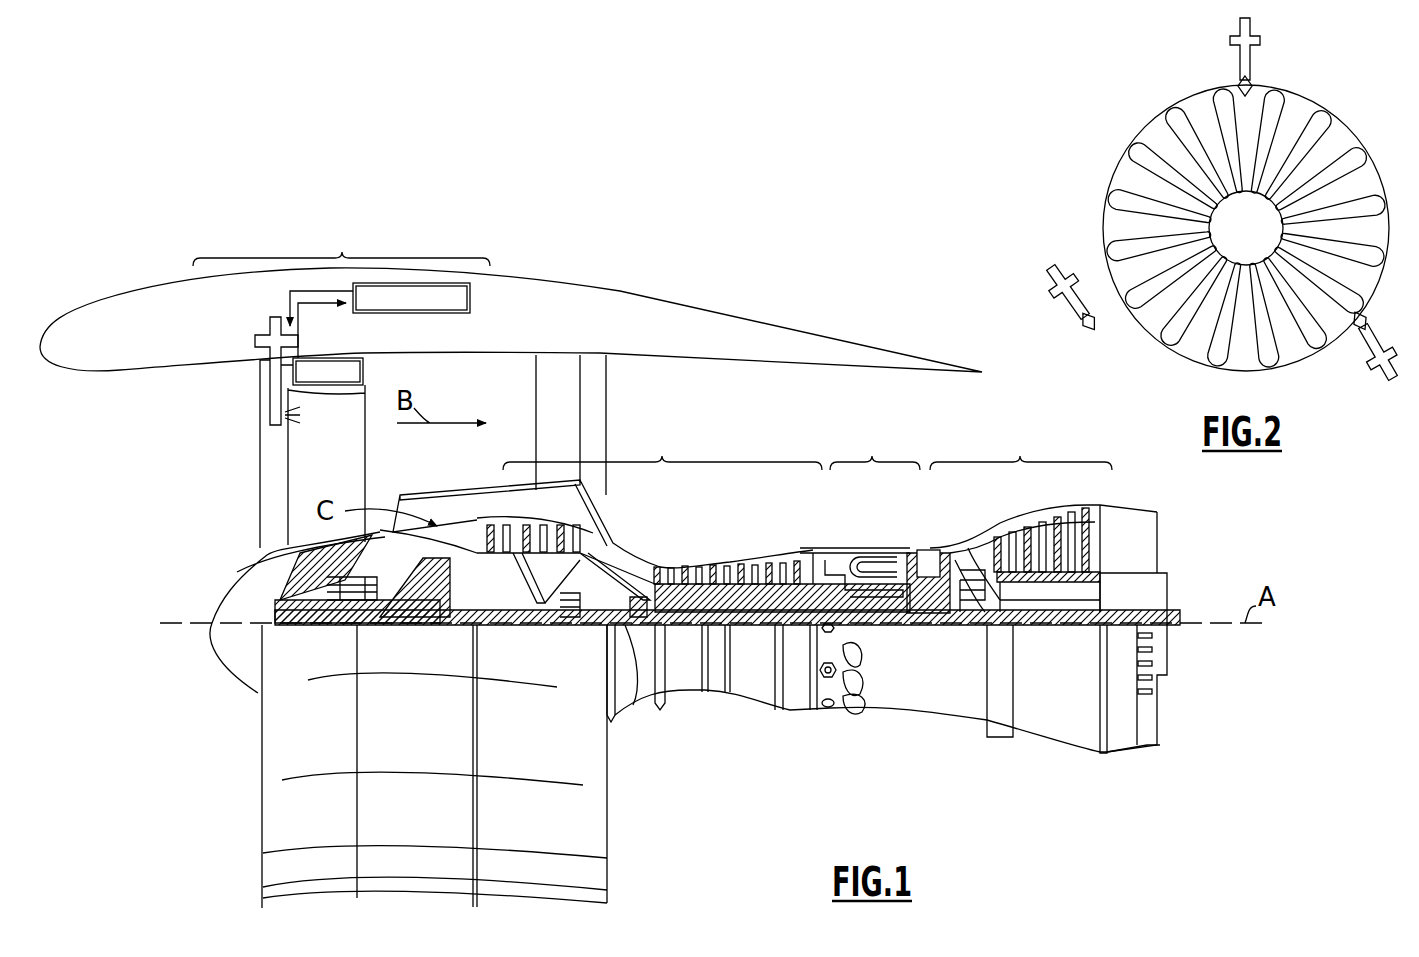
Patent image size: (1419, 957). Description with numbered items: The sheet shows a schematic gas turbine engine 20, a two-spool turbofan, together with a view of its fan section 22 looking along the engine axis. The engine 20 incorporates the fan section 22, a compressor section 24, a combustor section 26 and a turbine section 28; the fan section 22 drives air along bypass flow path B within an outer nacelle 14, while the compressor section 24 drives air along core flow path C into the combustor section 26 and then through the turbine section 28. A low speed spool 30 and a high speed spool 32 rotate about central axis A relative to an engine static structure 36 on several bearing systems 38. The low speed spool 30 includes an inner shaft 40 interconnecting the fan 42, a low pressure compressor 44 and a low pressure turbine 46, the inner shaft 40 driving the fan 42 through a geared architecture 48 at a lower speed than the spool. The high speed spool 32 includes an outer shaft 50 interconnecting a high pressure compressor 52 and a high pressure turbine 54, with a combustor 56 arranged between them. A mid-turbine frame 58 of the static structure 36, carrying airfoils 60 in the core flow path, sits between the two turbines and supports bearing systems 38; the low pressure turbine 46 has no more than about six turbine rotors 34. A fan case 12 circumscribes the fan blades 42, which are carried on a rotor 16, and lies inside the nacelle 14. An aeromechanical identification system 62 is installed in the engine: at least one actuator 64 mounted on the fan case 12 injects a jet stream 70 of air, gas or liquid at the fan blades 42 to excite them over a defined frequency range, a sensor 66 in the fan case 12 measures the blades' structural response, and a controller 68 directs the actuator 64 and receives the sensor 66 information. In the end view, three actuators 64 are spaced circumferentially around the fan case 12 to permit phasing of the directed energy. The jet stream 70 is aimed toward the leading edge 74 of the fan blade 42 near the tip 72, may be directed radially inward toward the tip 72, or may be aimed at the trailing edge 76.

In FIG. 1, the fan case 12 is at (418, 371).
In FIG. 2, the fan case 12 is at (1296, 93).
In FIG. 1, the outer nacelle 14 is at (637, 308).
In FIG. 1, the rotor 16 is at (270, 562).
In FIG. 2, the rotor 16 is at (1262, 226).
In FIG. 1, the gas turbine engine 20 is at (748, 254).
In FIG. 1, the fan section 22 is at (341, 245).
In FIG. 1, the compressor section 24 is at (662, 449).
In FIG. 1, the combustor section 26 is at (875, 449).
In FIG. 1, the turbine section 28 is at (1021, 449).
In FIG. 1, the low speed spool 30 is at (755, 630).
In FIG. 1, the high speed spool 32 is at (795, 550).
In FIG. 1, the turbine rotors 34 is at (1070, 600).
In FIG. 1, the engine static structure 36 is at (795, 712).
In FIG. 1, the bearing systems 38 is at (338, 625).
In FIG. 1, the inner shaft 40 is at (633, 705).
In FIG. 1, the fan blades 42 is at (312, 454).
In FIG. 2, the fan blades 42 is at (1355, 158).
In FIG. 1, the low pressure compressor 44 is at (590, 488).
In FIG. 1, the low pressure turbine 46 is at (1045, 505).
In FIG. 1, the geared architecture 48 is at (445, 625).
In FIG. 1, the outer shaft 50 is at (877, 627).
In FIG. 1, the high pressure compressor 52 is at (728, 570).
In FIG. 1, the high pressure turbine 54 is at (927, 550).
In FIG. 1, the combustor 56 is at (868, 565).
In FIG. 1, the mid-turbine frame 58 is at (968, 515).
In FIG. 1, the airfoils 60 is at (1008, 600).
In FIG. 1, the aeromechanical identification system 62 is at (233, 406).
In FIG. 1, the actuator 64 is at (256, 338).
In FIG. 2, the actuator 64 is at (1240, 55).
In FIG. 1, the sensor 66 is at (337, 358).
In FIG. 1, the controller 68 is at (470, 300).
In FIG. 1, the jet stream 70 is at (282, 437).
In FIG. 1, the tip 72 is at (366, 388).
In FIG. 1, the leading edge 74 is at (283, 494).
In FIG. 1, the trailing edge 76 is at (368, 472).